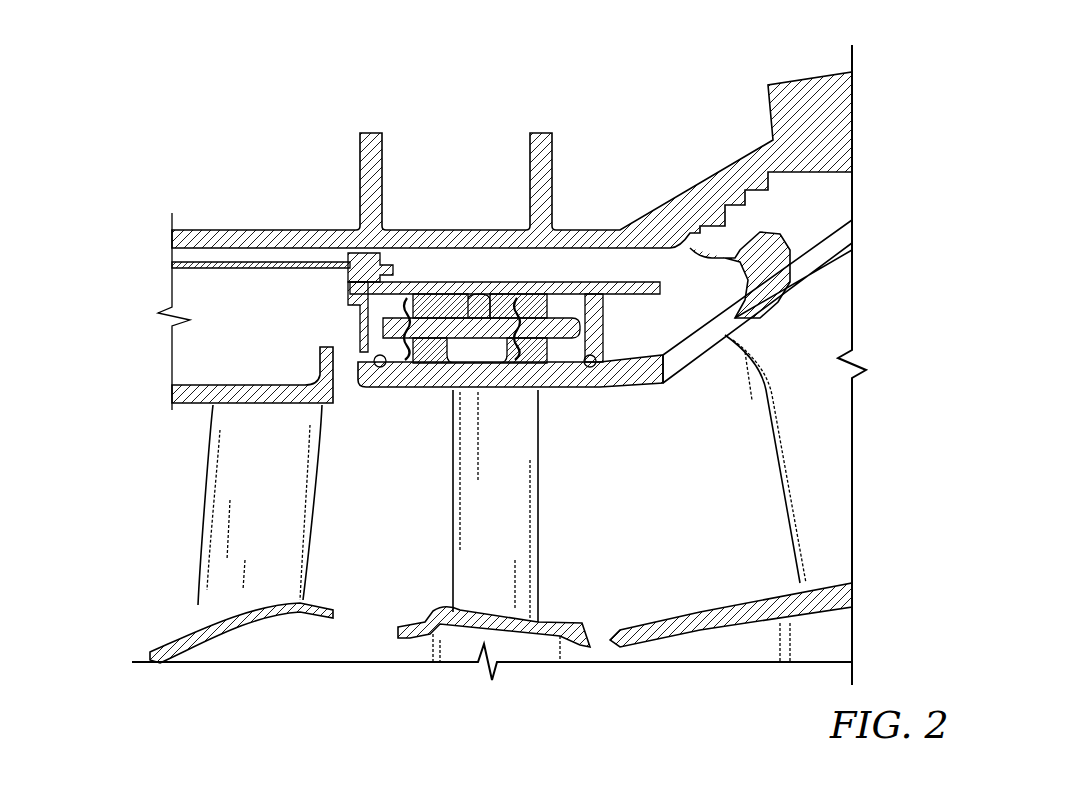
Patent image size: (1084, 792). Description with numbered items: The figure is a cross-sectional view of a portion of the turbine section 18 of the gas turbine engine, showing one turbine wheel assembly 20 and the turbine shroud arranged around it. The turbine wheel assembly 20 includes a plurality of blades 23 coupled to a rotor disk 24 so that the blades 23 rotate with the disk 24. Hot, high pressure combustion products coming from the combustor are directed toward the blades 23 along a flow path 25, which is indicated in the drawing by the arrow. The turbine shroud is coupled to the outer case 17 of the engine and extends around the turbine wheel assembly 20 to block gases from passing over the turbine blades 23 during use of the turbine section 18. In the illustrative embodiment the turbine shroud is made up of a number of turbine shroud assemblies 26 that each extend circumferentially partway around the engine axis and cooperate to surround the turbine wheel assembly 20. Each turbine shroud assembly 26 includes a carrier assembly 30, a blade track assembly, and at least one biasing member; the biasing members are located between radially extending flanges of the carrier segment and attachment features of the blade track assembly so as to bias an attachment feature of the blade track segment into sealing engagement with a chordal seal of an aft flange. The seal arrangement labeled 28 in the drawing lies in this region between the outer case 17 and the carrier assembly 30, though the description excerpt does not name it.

The outer case 17 is at (353, 222).
The turbine section 18 is at (453, 384).
The turbine wheel assembly 20 is at (368, 565).
The blades 23 is at (540, 557).
The rotor disk 24 is at (432, 647).
The flow path 25 is at (359, 499).
The turbine shroud assembly 26 is at (615, 275).
The seal assembly 28 is at (340, 292).
The carrier assembly 30 is at (604, 398).